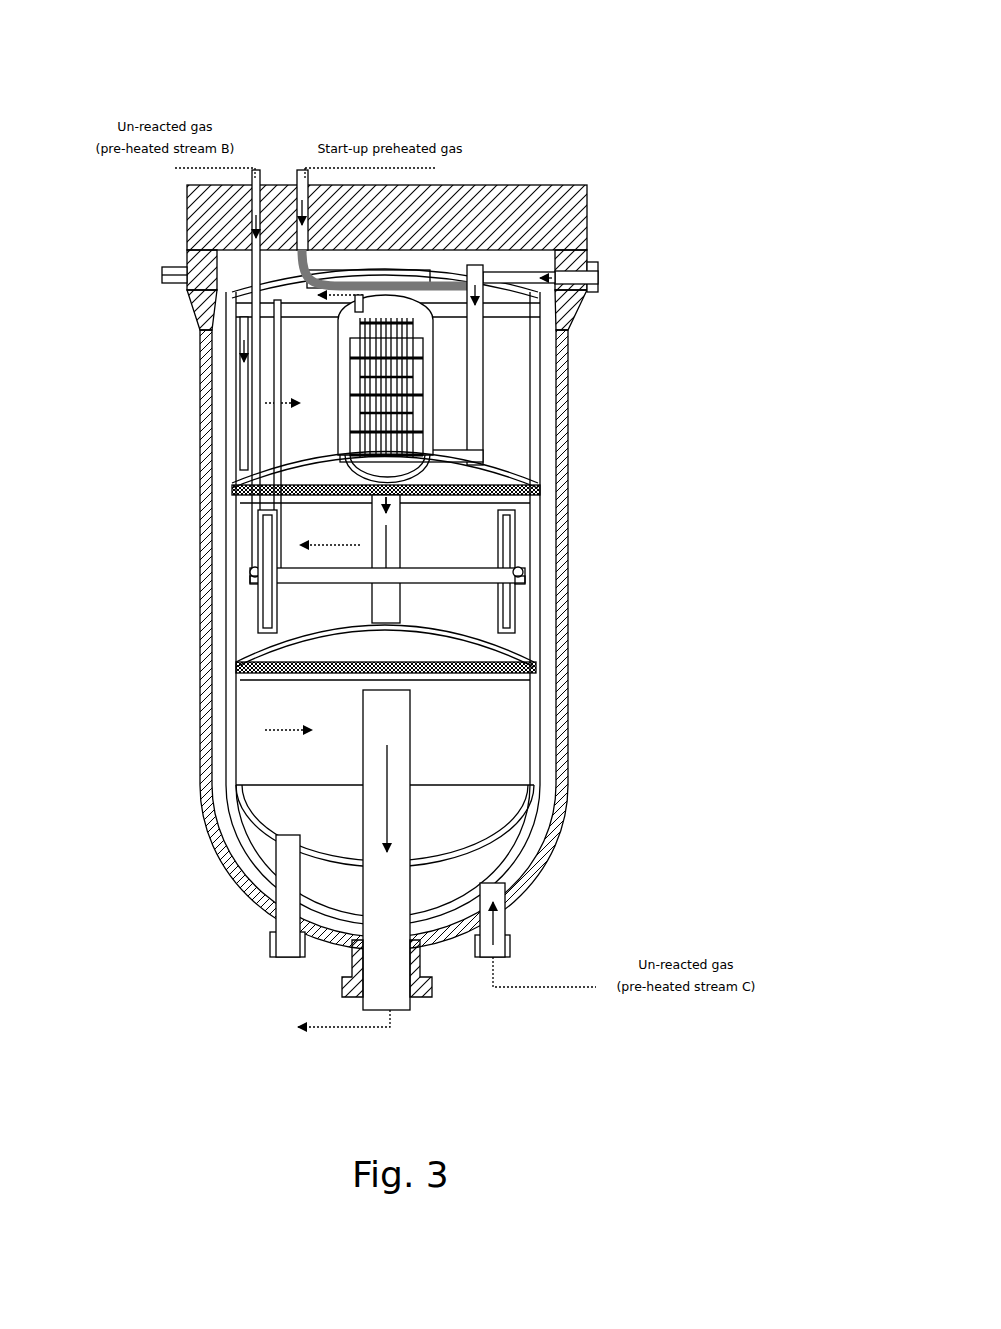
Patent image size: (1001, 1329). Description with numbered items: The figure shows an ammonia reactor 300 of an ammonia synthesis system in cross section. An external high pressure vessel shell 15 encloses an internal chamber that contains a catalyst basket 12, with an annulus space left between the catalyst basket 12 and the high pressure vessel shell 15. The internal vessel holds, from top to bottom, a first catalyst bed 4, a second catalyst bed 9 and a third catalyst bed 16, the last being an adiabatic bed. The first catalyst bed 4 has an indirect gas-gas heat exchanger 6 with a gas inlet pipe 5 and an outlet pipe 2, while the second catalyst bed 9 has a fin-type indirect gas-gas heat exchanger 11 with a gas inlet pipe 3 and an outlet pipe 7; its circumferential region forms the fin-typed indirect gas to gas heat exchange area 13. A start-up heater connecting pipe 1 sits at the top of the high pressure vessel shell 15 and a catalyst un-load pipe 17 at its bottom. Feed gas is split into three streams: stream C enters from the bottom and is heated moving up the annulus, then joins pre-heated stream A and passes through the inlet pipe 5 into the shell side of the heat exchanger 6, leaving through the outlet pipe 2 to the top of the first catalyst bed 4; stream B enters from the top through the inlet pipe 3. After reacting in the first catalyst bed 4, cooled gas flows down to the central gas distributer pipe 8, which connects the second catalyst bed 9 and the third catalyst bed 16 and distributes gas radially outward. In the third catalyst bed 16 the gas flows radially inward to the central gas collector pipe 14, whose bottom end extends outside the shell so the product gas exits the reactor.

The reactor 300 is at (106, 70).
The start-up heater connecting pipe 1 is at (300, 240).
The outlet pipe 2 is at (548, 262).
The gas inlet pipe 3 is at (262, 367).
The first catalyst bed 4 is at (510, 375).
The gas inlet pipe 5 is at (476, 430).
The indirect gas-gas heat exchanger 6 is at (420, 460).
The outlet pipe 7 is at (536, 488).
The second catalyst bed central gas distributer pipe 8 is at (385, 543).
The second catalyst bed 9 is at (497, 560).
The fin-type indirect gas-gas heat exchanger 11 is at (520, 578).
The catalyst basket 12 is at (520, 634).
The fin-typed indirect gas to gas heat exchange area 13 is at (523, 632).
The central gas collector pipe 14 is at (412, 767).
The high pressure vessel shell 15 is at (540, 783).
The third catalyst bed 16 is at (460, 820).
The catalyst un-load pipe 17 is at (293, 900).